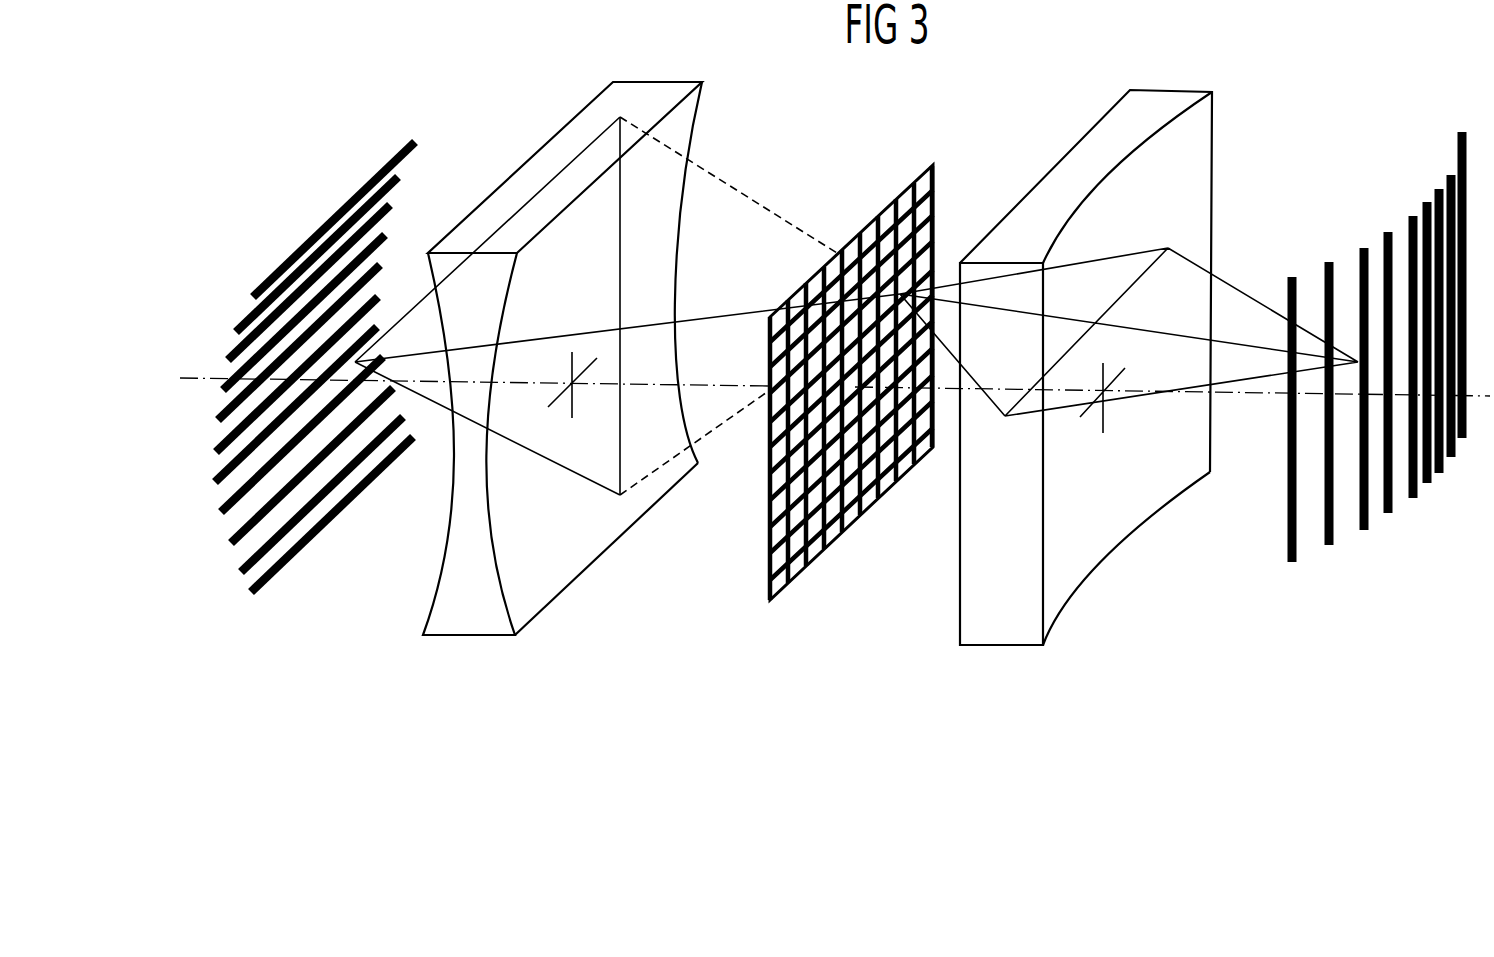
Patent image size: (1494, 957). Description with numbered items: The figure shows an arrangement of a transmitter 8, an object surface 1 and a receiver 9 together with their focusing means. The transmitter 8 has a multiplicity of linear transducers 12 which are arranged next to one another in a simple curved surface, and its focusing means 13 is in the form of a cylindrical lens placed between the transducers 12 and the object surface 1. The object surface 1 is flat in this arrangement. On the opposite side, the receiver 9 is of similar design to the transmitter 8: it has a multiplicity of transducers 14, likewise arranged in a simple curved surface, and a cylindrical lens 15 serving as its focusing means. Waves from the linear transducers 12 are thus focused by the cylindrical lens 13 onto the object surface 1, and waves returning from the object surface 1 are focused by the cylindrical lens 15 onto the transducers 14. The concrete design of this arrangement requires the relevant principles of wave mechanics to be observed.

The object surface 1 is at (888, 184).
The transmitter 8 is at (427, 47).
The receiver 9 is at (1488, 133).
The linear transducers 12 is at (233, 545).
The focusing means 13 is at (655, 88).
The transducers 14 is at (1330, 545).
The cylindrical lens 15 is at (1163, 100).